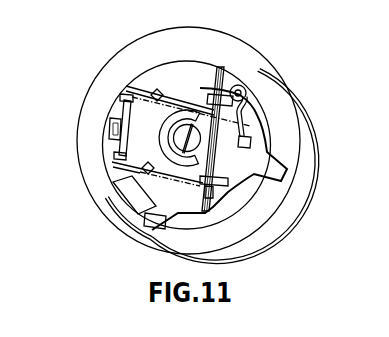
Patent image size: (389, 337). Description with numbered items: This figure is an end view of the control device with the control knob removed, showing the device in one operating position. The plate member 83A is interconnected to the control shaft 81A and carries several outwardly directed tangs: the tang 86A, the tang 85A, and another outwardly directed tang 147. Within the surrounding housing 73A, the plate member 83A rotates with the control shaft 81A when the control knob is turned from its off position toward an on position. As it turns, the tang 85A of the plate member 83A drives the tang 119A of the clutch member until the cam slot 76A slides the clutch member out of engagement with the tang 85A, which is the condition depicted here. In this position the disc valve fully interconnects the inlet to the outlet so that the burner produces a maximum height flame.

The housing 73A is at (298, 113).
The plate member 83A is at (166, 68).
The control shaft 81A is at (211, 96).
The outwardly directed tang 147 is at (283, 172).
The tang 85A is at (112, 162).
The tang of the clutch member 119A is at (113, 197).
The cam slot 76A is at (127, 219).
The outwardly directed tang 86A is at (157, 231).